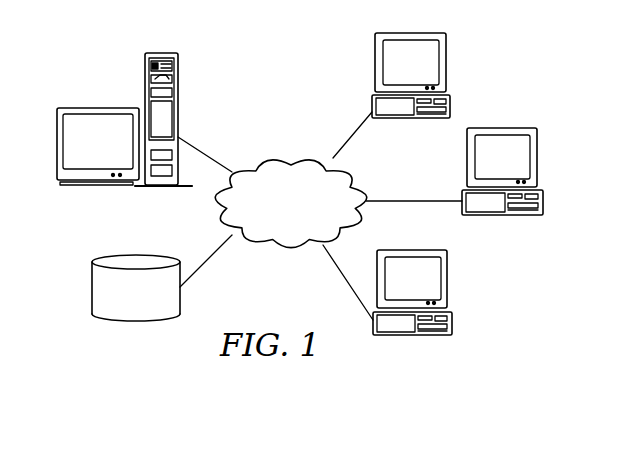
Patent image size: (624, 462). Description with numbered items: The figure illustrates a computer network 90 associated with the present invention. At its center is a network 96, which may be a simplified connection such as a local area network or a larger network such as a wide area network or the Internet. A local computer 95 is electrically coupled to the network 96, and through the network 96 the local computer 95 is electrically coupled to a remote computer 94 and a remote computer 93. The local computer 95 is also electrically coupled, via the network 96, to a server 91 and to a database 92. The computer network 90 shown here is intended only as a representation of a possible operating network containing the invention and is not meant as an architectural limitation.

The computer network 90 is at (258, 78).
The server 91 is at (101, 107).
The database 92 is at (92, 287).
The remote computer 93 is at (448, 278).
The remote computer 94 is at (538, 162).
The local computer 95 is at (446, 63).
The network 96 is at (302, 219).